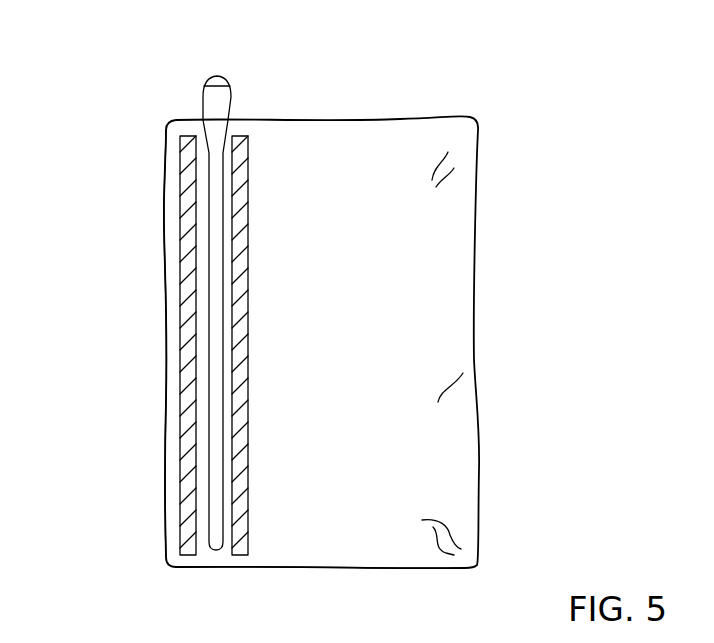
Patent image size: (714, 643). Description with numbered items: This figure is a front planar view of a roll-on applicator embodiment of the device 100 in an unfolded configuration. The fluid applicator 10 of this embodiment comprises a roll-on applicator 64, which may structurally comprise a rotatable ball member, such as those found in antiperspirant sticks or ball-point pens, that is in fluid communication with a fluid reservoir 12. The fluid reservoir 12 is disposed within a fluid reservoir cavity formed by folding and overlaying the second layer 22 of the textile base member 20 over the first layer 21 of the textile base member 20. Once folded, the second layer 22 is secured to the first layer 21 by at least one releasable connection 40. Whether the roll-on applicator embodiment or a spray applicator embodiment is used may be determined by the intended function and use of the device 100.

The fluid applicator 10 is at (116, 79).
The fluid reservoir 12 is at (216, 352).
The textile base member 20 is at (452, 290).
The first layer 21 is at (276, 552).
The second layer 22 is at (172, 495).
The releasable connection 40 is at (187, 193).
The roll-on applicator 64 is at (209, 77).
The device 100 is at (578, 104).